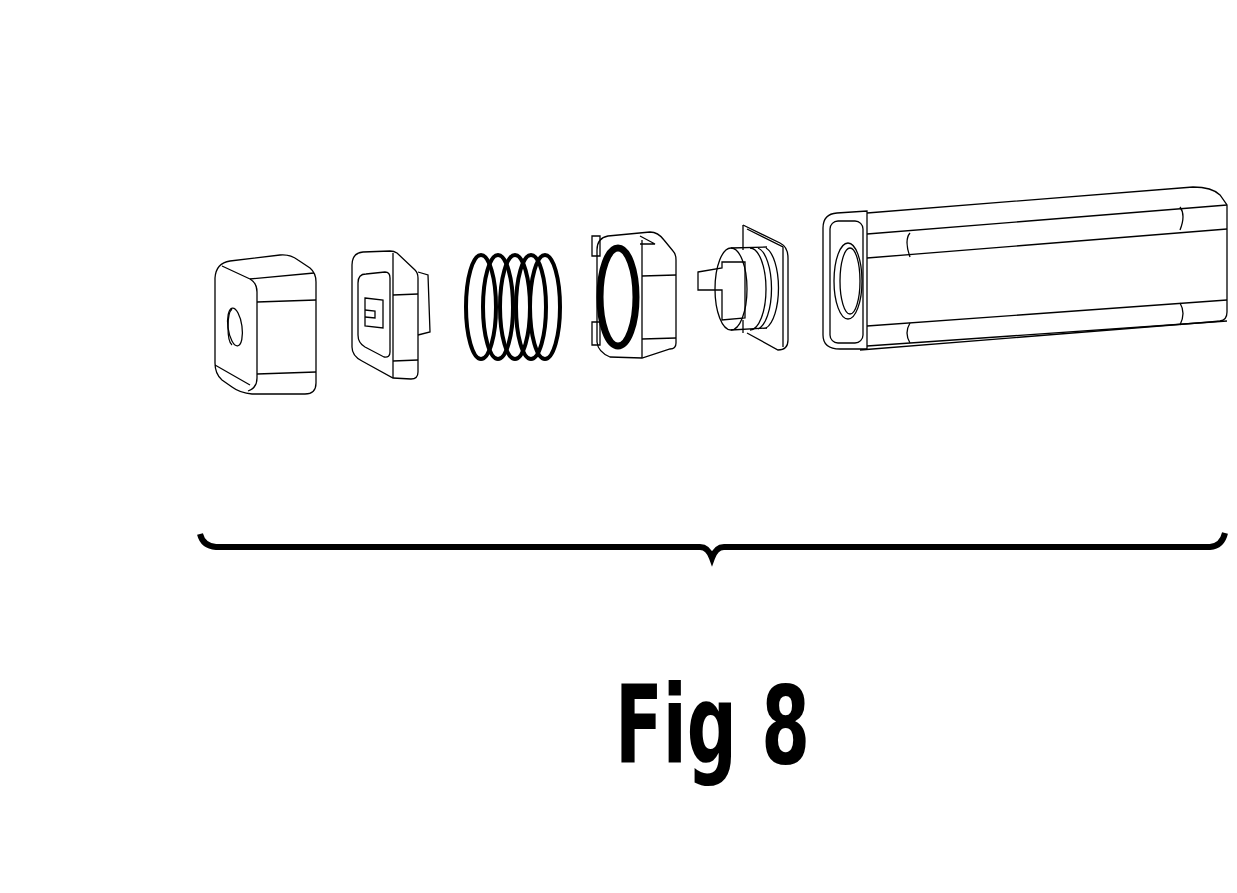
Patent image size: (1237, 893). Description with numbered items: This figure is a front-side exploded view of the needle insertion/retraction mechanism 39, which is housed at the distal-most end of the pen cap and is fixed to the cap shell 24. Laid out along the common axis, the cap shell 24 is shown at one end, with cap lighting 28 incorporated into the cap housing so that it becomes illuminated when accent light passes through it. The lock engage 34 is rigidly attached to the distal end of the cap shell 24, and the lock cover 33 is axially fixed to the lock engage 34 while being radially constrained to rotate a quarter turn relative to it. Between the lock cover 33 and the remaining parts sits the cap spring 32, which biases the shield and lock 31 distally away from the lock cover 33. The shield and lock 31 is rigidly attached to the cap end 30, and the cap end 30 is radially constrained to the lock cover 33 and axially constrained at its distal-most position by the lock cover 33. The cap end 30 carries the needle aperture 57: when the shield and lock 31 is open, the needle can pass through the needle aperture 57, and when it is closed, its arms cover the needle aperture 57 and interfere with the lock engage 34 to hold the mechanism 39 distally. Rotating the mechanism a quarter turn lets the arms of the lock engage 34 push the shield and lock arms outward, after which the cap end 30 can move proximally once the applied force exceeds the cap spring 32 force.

The cap shell 24 is at (945, 200).
The cap lighting 28 is at (964, 348).
The cap end 30 is at (262, 254).
The shield and lock 31 is at (384, 388).
The cap spring 32 is at (470, 258).
The lock cover 33 is at (638, 366).
The lock engage 34 is at (752, 226).
The needle insertion/retraction mechanism 39 is at (712, 568).
The needle aperture 57 is at (229, 346).